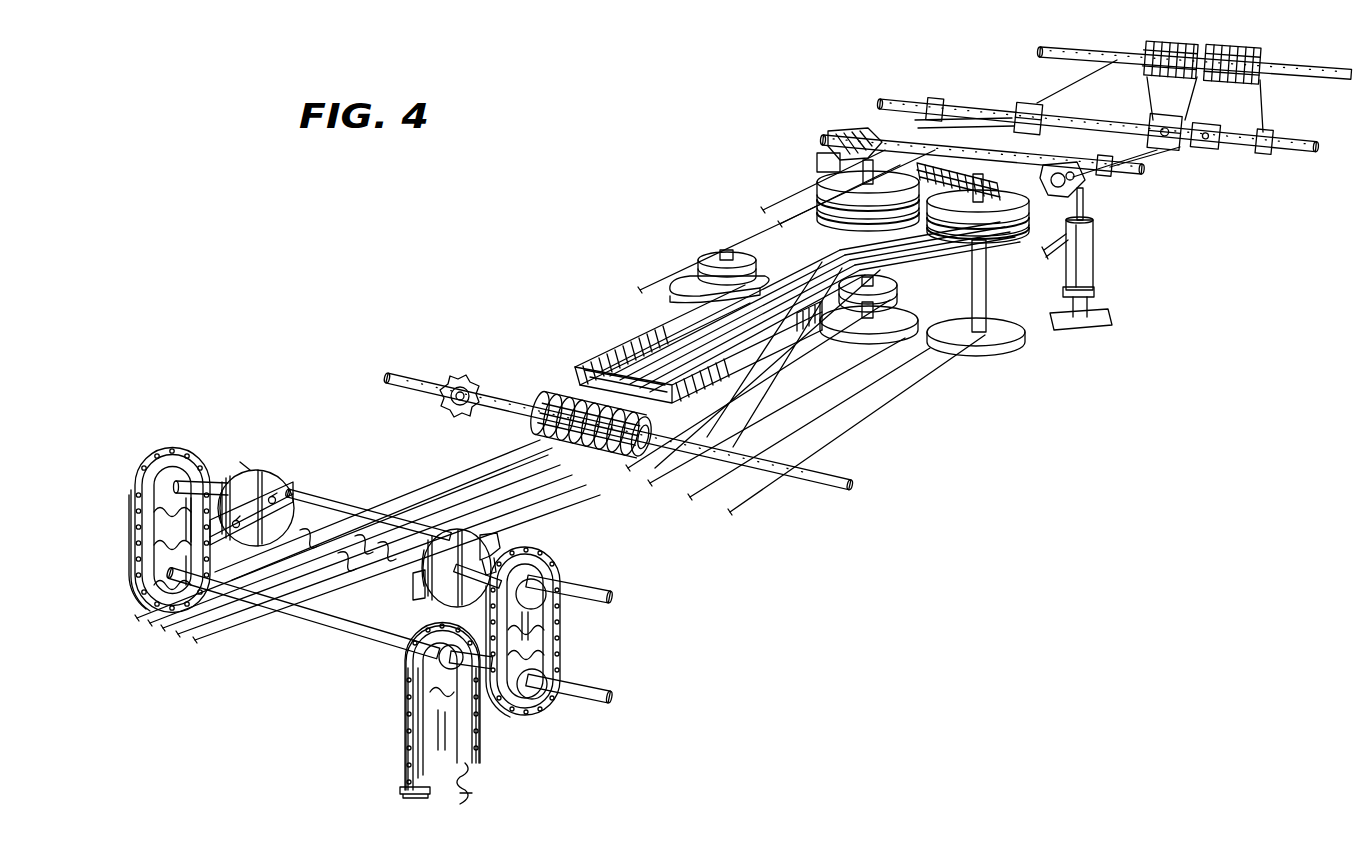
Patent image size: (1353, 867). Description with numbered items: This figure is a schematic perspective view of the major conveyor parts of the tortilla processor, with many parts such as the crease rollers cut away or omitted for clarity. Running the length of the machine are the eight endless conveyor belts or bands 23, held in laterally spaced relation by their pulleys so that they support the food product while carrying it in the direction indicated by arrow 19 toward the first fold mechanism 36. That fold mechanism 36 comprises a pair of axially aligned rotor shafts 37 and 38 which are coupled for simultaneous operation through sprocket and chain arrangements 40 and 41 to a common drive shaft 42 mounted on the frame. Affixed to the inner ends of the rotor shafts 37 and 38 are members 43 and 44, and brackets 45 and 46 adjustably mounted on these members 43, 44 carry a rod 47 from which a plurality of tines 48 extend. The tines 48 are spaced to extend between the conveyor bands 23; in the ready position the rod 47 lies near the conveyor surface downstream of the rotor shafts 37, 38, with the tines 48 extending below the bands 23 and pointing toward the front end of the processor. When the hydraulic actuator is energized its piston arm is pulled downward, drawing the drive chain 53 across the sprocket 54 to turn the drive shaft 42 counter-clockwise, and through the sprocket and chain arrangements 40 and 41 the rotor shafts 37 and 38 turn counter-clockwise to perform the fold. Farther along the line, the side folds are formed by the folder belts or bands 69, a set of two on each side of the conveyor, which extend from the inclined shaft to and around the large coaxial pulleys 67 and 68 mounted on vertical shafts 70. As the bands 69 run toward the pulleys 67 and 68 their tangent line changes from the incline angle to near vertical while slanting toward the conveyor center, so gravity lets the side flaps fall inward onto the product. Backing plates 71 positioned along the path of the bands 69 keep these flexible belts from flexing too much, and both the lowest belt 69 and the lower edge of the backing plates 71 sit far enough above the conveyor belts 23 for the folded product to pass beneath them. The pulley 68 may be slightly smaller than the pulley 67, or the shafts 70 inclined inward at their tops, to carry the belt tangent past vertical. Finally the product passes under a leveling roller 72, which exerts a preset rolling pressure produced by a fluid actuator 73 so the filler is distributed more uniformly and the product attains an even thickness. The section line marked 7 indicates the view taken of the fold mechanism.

The section line 7 is at (530, 505).
The arrow 19 is at (158, 683).
The endless belts or bands 23 is at (312, 581).
The first fold mechanism 36 is at (244, 462).
The rotor shaft 37 is at (210, 483).
The rotor shaft 38 is at (596, 596).
The sprocket and chain arrangement 40 is at (178, 445).
The sprocket and chain arrangement 41 is at (544, 712).
The common drive shaft 42 is at (592, 700).
The member 43 is at (259, 491).
The member 44 is at (442, 529).
The bracket 45 is at (288, 495).
The bracket 46 is at (485, 536).
The rod 47 is at (329, 484).
The tines 48 is at (388, 554).
The drive chain 53 is at (403, 750).
The sprocket 54 is at (410, 706).
The large coaxial pulley 67 is at (837, 174).
The large coaxial pulley 68 is at (834, 217).
The folder belts or bands 69 is at (782, 217).
The vertical shaft 70 is at (858, 138).
The backing plate 71 is at (753, 253).
The leveling roller 72 is at (965, 167).
The fluid actuator 73 is at (1097, 259).